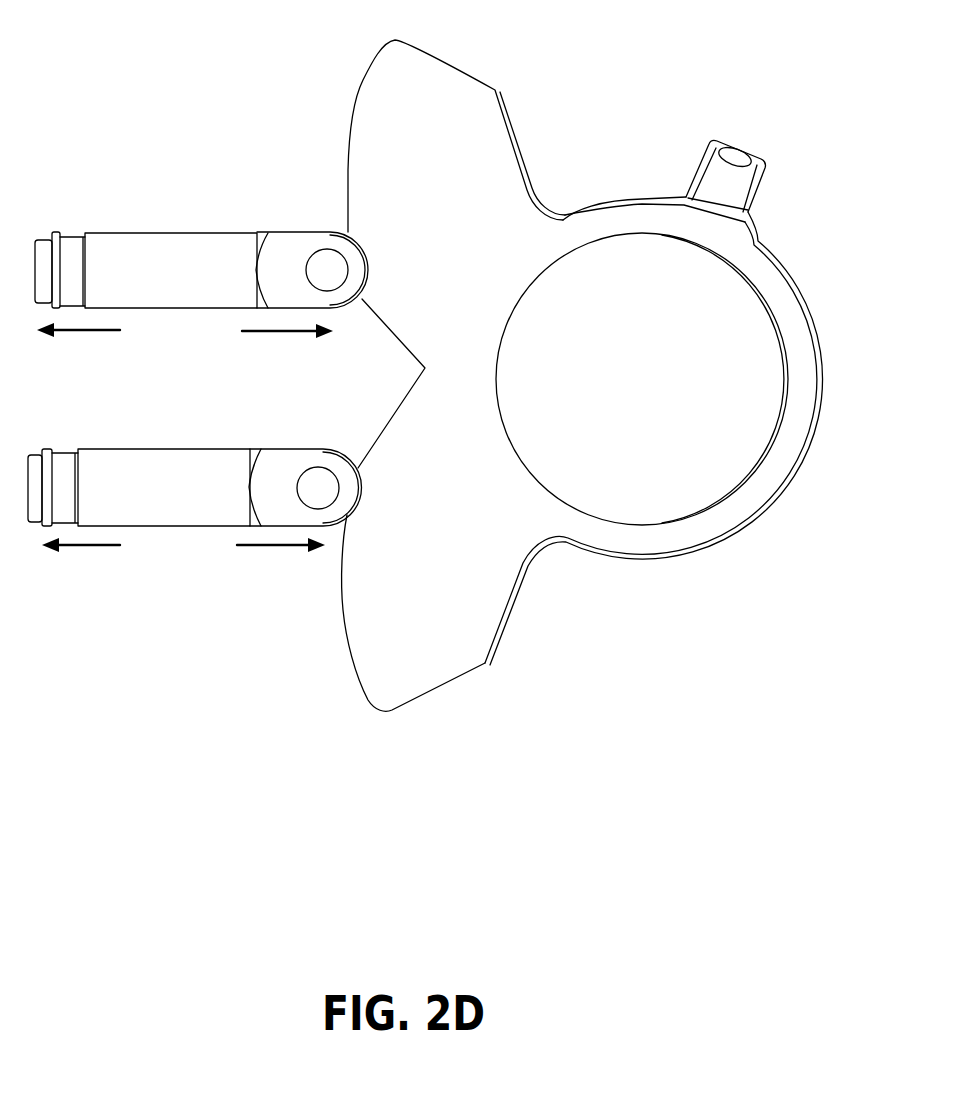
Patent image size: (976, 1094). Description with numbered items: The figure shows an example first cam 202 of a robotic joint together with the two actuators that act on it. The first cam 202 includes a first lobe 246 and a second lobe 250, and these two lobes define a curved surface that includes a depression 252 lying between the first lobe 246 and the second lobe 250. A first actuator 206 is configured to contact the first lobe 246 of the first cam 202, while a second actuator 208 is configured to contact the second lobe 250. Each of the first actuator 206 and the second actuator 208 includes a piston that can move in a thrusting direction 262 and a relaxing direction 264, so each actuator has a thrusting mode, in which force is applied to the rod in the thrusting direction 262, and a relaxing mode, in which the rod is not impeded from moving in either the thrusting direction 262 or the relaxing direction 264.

The first cam 202 is at (704, 104).
The first actuator 206 is at (120, 235).
The second actuator 208 is at (122, 452).
The first lobe 246 is at (353, 120).
The second lobe 250 is at (345, 617).
The depression 252 is at (425, 367).
The thrusting direction 262 is at (297, 333).
The relaxing direction 264 is at (72, 332).